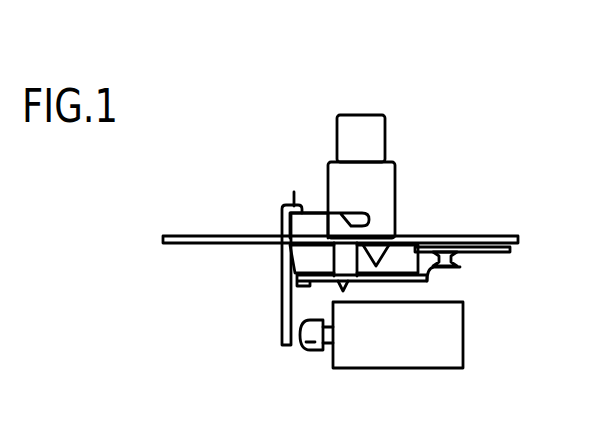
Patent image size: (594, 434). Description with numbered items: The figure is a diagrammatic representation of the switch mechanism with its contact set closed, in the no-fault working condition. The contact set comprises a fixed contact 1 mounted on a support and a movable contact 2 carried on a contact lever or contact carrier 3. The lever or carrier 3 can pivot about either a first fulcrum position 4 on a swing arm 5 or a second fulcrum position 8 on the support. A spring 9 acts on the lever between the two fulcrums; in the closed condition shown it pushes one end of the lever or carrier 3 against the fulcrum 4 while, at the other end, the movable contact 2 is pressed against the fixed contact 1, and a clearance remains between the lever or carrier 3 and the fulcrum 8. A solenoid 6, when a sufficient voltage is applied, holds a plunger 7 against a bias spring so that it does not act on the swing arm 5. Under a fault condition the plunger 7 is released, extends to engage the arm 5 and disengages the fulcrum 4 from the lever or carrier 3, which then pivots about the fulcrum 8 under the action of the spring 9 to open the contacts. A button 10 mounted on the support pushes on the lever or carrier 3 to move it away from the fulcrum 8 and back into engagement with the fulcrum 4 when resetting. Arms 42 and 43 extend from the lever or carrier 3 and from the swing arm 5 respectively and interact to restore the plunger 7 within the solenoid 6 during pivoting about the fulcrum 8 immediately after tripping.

The fixed contact 1 is at (443, 252).
The movable contact 2 is at (460, 267).
The contact lever or contact carrier 3 is at (392, 282).
The first fulcrum position 4 is at (295, 274).
The swing arm 5 is at (290, 262).
The solenoid 6 is at (437, 352).
The plunger 7 is at (315, 350).
The second fulcrum position 8 is at (400, 237).
The spring 9 is at (343, 285).
The button 10 is at (376, 116).
The arm 42 is at (345, 244).
The arm 43 is at (316, 214).